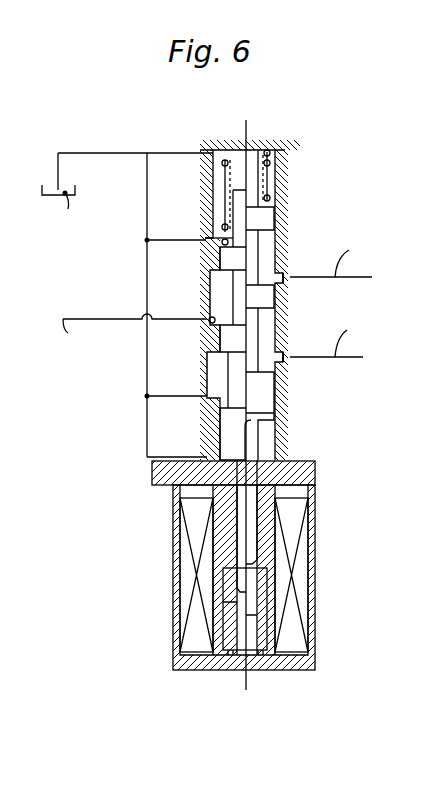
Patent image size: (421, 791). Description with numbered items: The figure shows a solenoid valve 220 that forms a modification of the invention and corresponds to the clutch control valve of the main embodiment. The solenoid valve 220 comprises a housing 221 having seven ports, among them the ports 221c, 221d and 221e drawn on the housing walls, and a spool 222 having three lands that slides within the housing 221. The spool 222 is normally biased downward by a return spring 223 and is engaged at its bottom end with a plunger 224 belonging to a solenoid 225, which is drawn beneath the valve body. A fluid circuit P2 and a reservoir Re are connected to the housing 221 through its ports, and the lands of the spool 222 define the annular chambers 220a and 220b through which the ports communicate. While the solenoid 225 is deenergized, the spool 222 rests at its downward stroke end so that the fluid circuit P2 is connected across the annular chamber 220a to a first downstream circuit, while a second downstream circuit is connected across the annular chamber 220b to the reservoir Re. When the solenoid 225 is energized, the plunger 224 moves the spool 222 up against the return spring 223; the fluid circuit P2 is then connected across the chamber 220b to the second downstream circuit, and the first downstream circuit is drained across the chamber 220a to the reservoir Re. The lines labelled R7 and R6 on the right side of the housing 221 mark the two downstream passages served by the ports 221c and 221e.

The solenoid valve 220 is at (352, 435).
The annular chamber 220a is at (180, 297).
The annular chamber 220b is at (179, 375).
The housing 221 is at (286, 146).
The port 221c is at (285, 284).
The port 221d is at (212, 323).
The port 221e is at (285, 365).
The spool 222 is at (276, 244).
The return spring 223 is at (278, 190).
The plunger 224 is at (240, 628).
The solenoid 225 is at (300, 558).
The reservoir Re is at (127, 194).
The fluid circuit P2 is at (135, 305).
The port line R6 is at (327, 343).
The port line R7 is at (331, 263).